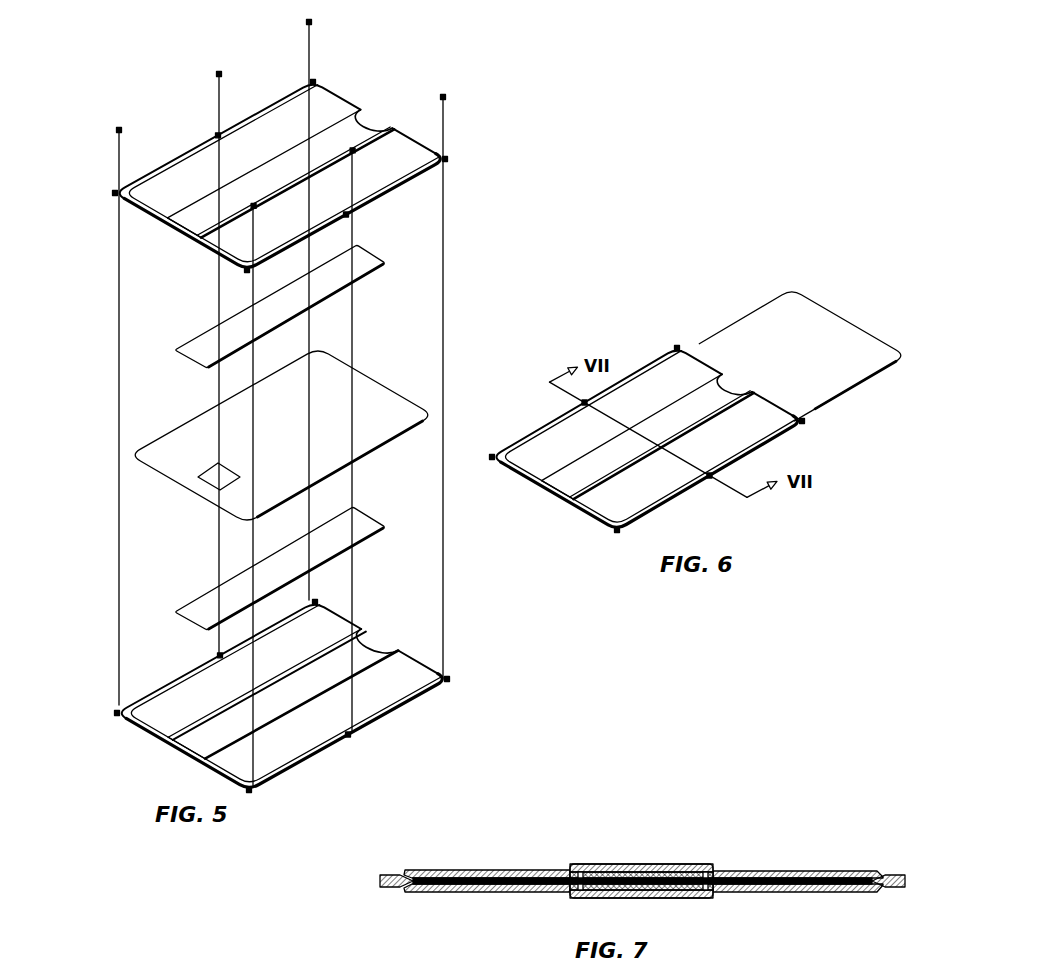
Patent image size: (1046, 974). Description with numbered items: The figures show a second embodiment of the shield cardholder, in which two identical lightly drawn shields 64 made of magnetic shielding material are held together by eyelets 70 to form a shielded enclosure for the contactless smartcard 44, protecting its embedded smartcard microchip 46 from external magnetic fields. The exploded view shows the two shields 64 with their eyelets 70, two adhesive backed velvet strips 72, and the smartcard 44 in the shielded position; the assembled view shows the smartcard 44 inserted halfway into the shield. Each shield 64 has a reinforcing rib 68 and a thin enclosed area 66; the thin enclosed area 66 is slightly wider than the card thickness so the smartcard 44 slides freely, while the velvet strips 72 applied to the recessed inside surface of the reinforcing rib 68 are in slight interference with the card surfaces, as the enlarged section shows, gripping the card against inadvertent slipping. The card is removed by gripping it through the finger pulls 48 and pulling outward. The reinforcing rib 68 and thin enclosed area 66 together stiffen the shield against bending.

In FIG. 5, the contactless smartcard 44 is at (220, 513).
In FIG. 6, the contactless smartcard 44 is at (827, 312).
In FIG. 7, the contactless smartcard 44 is at (553, 878).
In FIG. 5, the embedded smartcard microchip 46 is at (215, 487).
In FIG. 5, the finger pull 48 is at (367, 110).
In FIG. 6, the finger pull 48 is at (734, 384).
In FIG. 5, the lightly drawn shield 64 is at (417, 181).
In FIG. 6, the lightly drawn shield 64 is at (687, 371).
In FIG. 7, the lightly drawn shield 64 is at (445, 870).
In FIG. 5, the thin enclosed area 66 is at (418, 138).
In FIG. 6, the thin enclosed area 66 is at (662, 445).
In FIG. 7, the thin enclosed area 66 is at (777, 871).
In FIG. 5, the reinforcing rib 68 is at (384, 126).
In FIG. 6, the reinforcing rib 68 is at (632, 436).
In FIG. 7, the reinforcing rib 68 is at (637, 869).
In FIG. 5, the eyelet 70 is at (307, 21).
In FIG. 6, the eyelet 70 is at (677, 348).
In FIG. 7, the eyelet 70 is at (395, 873).
In FIG. 5, the adhesive backed velvet strip 72 is at (377, 268).
In FIG. 7, the adhesive backed velvet strip 72 is at (653, 873).